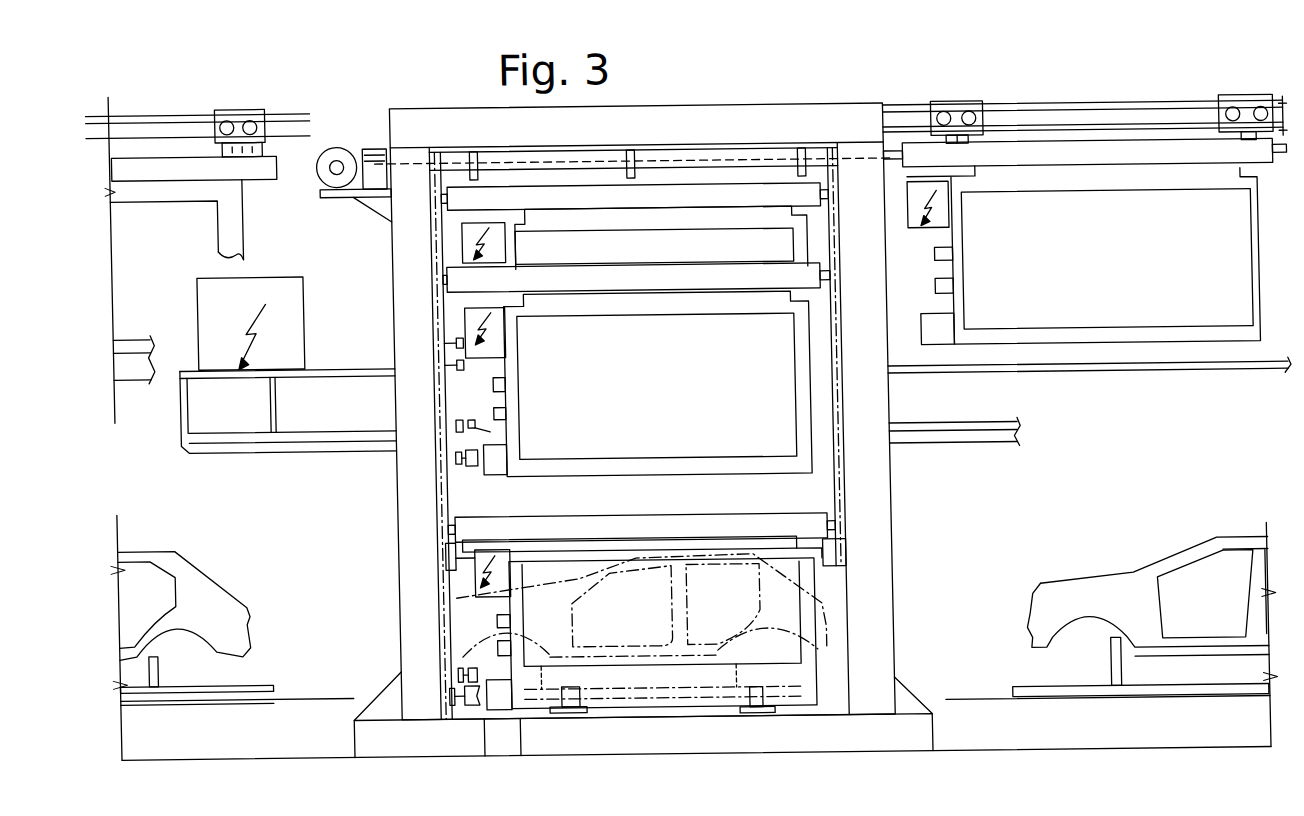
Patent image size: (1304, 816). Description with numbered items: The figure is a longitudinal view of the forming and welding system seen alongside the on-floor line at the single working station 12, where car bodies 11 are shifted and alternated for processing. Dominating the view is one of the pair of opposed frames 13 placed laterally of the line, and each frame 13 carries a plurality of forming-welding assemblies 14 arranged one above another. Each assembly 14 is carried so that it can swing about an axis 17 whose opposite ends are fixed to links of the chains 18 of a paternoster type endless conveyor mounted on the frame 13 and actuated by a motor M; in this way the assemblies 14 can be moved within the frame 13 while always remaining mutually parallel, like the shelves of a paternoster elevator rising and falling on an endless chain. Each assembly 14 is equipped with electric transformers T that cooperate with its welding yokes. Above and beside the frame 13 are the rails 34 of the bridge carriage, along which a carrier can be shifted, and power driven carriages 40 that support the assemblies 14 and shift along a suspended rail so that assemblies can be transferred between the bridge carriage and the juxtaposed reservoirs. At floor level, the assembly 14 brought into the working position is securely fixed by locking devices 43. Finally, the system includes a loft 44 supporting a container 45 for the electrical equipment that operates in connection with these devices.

The car body 11 is at (217, 598).
The working station 12 is at (639, 678).
The frame 13 is at (889, 541).
The forming-welding assembly 14 is at (811, 370).
The axis 17 is at (727, 190).
The chain 18 is at (439, 507).
The rail 34 is at (1100, 109).
The power driven carriage 40 is at (985, 117).
The locking device 43 is at (569, 705).
The loft 44 is at (264, 436).
The container 45 is at (290, 299).
The motor M is at (351, 143).
The electric transformer T is at (466, 233).